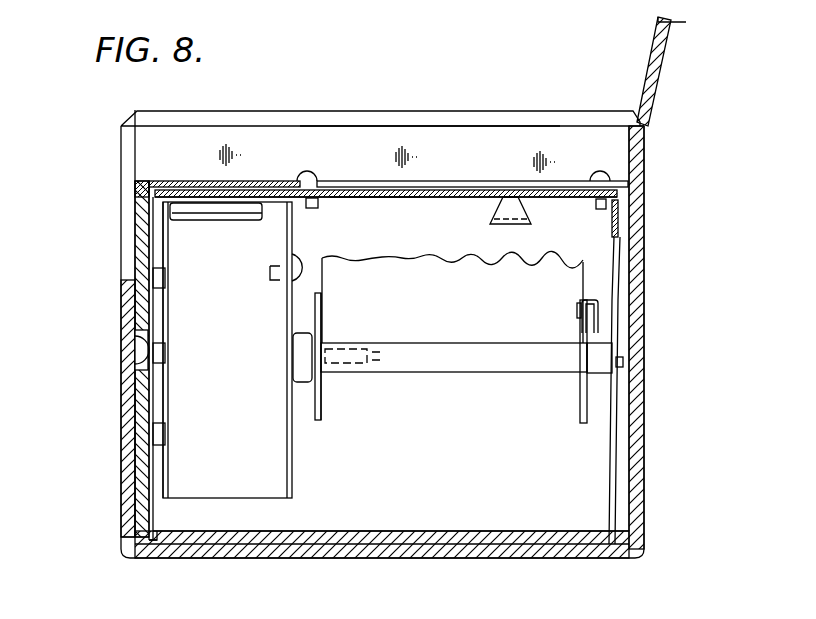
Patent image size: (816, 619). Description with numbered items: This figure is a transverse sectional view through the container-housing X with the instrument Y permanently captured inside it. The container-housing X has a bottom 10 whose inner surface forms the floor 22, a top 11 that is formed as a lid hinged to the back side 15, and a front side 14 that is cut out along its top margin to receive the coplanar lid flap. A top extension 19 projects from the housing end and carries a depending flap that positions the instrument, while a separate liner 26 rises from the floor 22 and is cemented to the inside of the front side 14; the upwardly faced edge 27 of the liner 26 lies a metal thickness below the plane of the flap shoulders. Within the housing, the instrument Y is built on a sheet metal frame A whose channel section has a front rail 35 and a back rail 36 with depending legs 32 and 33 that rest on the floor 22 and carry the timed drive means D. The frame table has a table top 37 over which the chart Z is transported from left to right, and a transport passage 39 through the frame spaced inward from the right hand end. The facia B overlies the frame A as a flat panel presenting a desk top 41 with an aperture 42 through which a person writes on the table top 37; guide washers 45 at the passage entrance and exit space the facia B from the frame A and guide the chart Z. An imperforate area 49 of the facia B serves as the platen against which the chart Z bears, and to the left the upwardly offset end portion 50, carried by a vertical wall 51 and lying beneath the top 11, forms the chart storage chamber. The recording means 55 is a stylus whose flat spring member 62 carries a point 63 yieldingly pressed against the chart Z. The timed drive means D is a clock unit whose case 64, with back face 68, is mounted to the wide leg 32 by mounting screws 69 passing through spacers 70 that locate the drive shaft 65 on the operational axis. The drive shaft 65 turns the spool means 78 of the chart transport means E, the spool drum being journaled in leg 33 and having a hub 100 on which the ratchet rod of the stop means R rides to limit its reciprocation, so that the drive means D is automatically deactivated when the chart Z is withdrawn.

The bottom 10 is at (352, 558).
The top 11 is at (648, 57).
The front side 14 is at (128, 402).
The back side 15 is at (646, 422).
The top extension 19 is at (417, 530).
The floor 22 is at (453, 546).
The liner 26 is at (140, 241).
The upwardly faced edge 27 is at (145, 181).
The leg 32 is at (155, 517).
The leg 33 is at (610, 508).
The rail 35 is at (148, 212).
The rail 36 is at (619, 220).
The table top 37 is at (478, 190).
The transport passage 39 is at (428, 190).
The desk top 41 is at (283, 182).
The aperture 42 is at (375, 182).
The guide washers 45 is at (321, 157).
The imperforate area 49 is at (375, 197).
The upwardly offset end portion 50 is at (192, 125).
The vertical wall 51 is at (586, 180).
The recording means 55 is at (489, 223).
The flat spring member 62 is at (505, 224).
The point 63 is at (505, 205).
The case 64 is at (232, 350).
The drive shaft 65 is at (352, 365).
The back face 68 is at (165, 463).
The mounting screws 69 is at (145, 352).
The spacers 70 is at (166, 279).
The spool means 78 is at (370, 367).
The hub 100 is at (603, 378).
The frame A is at (622, 262).
The facia B is at (330, 140).
The timed drive means D is at (216, 280).
The chart transport means E is at (327, 421).
The stop means R is at (590, 297).
The container-housing X is at (108, 321).
The instrument Y is at (428, 132).
The chart Z is at (454, 311).